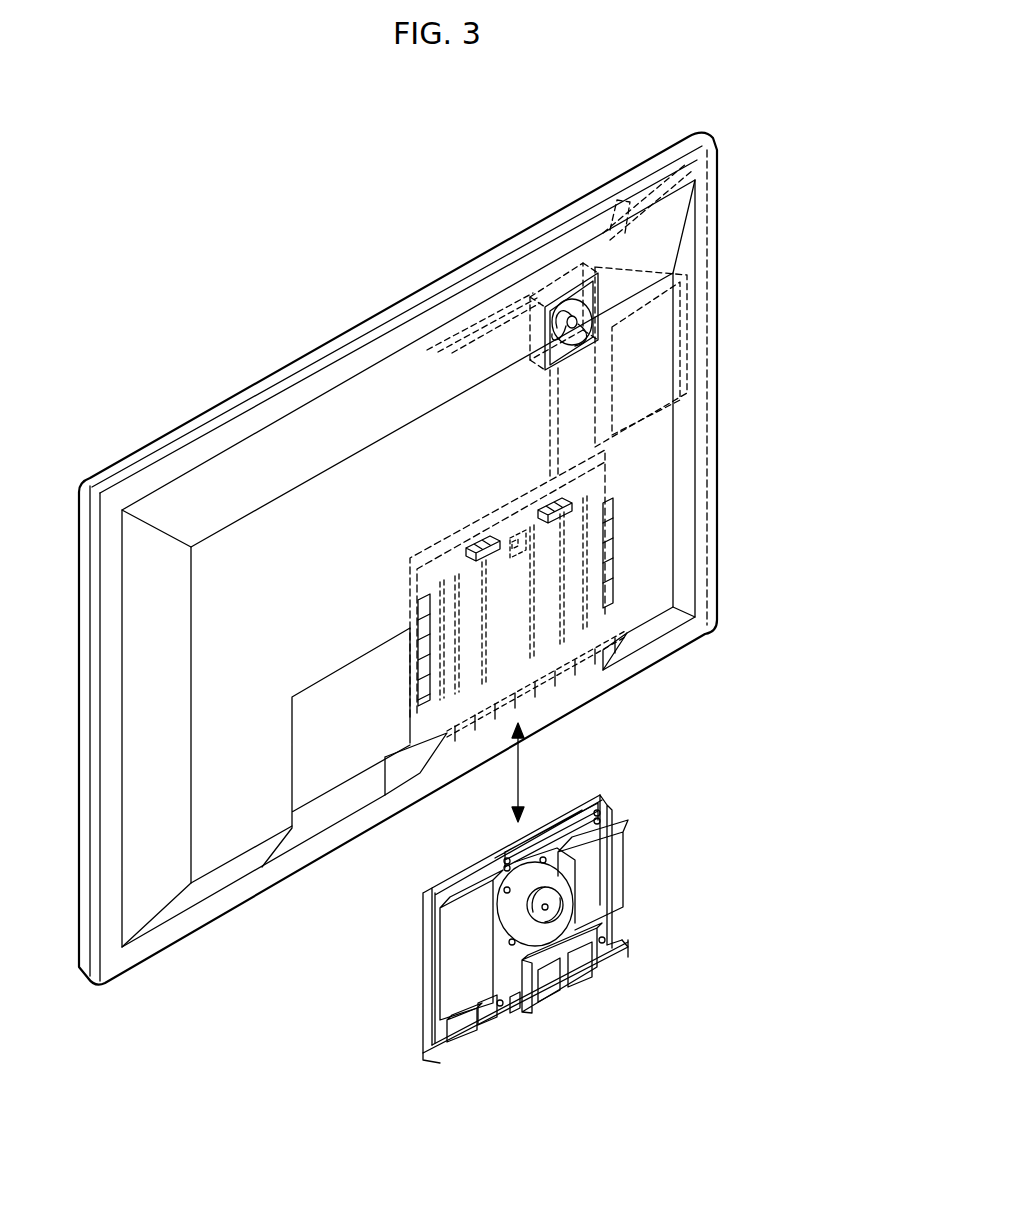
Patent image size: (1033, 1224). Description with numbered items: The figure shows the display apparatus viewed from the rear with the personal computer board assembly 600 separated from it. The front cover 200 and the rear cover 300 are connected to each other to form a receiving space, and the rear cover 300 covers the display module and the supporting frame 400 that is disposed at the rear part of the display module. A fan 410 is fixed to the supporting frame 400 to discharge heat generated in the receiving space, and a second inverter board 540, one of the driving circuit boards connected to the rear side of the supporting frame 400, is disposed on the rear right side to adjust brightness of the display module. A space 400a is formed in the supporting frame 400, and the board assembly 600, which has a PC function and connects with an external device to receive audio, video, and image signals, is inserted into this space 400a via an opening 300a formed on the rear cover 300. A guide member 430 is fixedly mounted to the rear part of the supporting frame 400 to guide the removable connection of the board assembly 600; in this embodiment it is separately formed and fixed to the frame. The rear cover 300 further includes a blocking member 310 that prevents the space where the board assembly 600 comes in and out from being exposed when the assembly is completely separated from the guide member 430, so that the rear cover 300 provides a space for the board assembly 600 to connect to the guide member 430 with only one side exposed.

The front cover 200 is at (691, 139).
The rear cover 300 is at (717, 181).
The opening 300a is at (538, 690).
The blocking member 310 is at (553, 655).
The supporting frame 400 is at (687, 472).
The space 400a is at (432, 575).
The fan 410 is at (562, 288).
The guide member 430 is at (605, 565).
The second inverter board 540 is at (666, 335).
The PC board assembly 600 is at (565, 998).